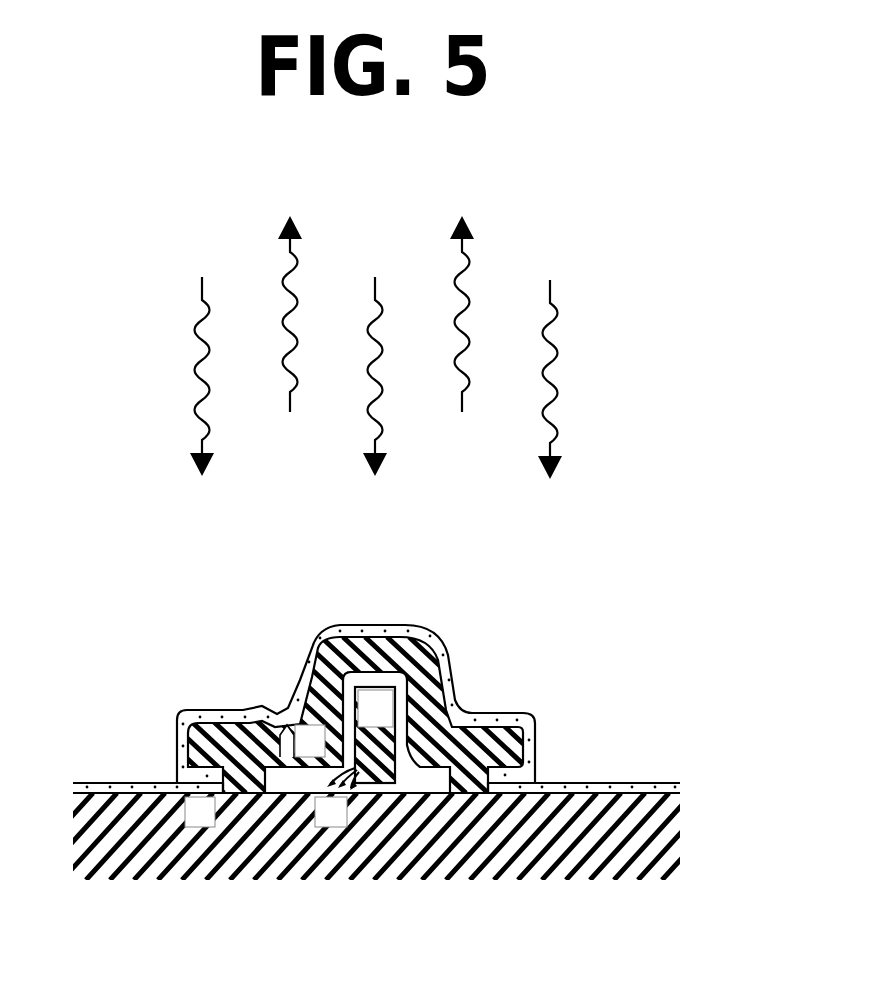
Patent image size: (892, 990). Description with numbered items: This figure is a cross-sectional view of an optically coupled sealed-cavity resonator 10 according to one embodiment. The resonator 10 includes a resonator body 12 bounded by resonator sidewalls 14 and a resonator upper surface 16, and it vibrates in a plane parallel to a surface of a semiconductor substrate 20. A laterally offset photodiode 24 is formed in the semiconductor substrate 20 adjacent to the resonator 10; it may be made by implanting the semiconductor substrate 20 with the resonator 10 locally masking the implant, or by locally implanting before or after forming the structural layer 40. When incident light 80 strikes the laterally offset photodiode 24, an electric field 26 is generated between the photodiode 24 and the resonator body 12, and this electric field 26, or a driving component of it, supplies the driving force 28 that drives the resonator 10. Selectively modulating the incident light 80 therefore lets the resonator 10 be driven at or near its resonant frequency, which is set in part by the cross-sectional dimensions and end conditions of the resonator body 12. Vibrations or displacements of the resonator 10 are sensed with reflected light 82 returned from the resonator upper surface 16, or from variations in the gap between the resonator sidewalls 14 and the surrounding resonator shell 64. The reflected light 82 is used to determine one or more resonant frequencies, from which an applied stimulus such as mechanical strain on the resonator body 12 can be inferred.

The optically coupled resonator 10 is at (392, 706).
The resonator body 12 is at (380, 690).
The resonator sidewalls 14 is at (345, 695).
The resonator upper surface 16 is at (368, 690).
The semiconductor substrate 20 is at (683, 812).
The laterally offset photodiode 24 is at (300, 803).
The electric field 26 is at (403, 790).
The driving force 28 is at (397, 737).
The structural layer 40 is at (346, 733).
The resonator shell 64 is at (310, 670).
The incident light 80 is at (555, 418).
The reflected light 82 is at (470, 262).